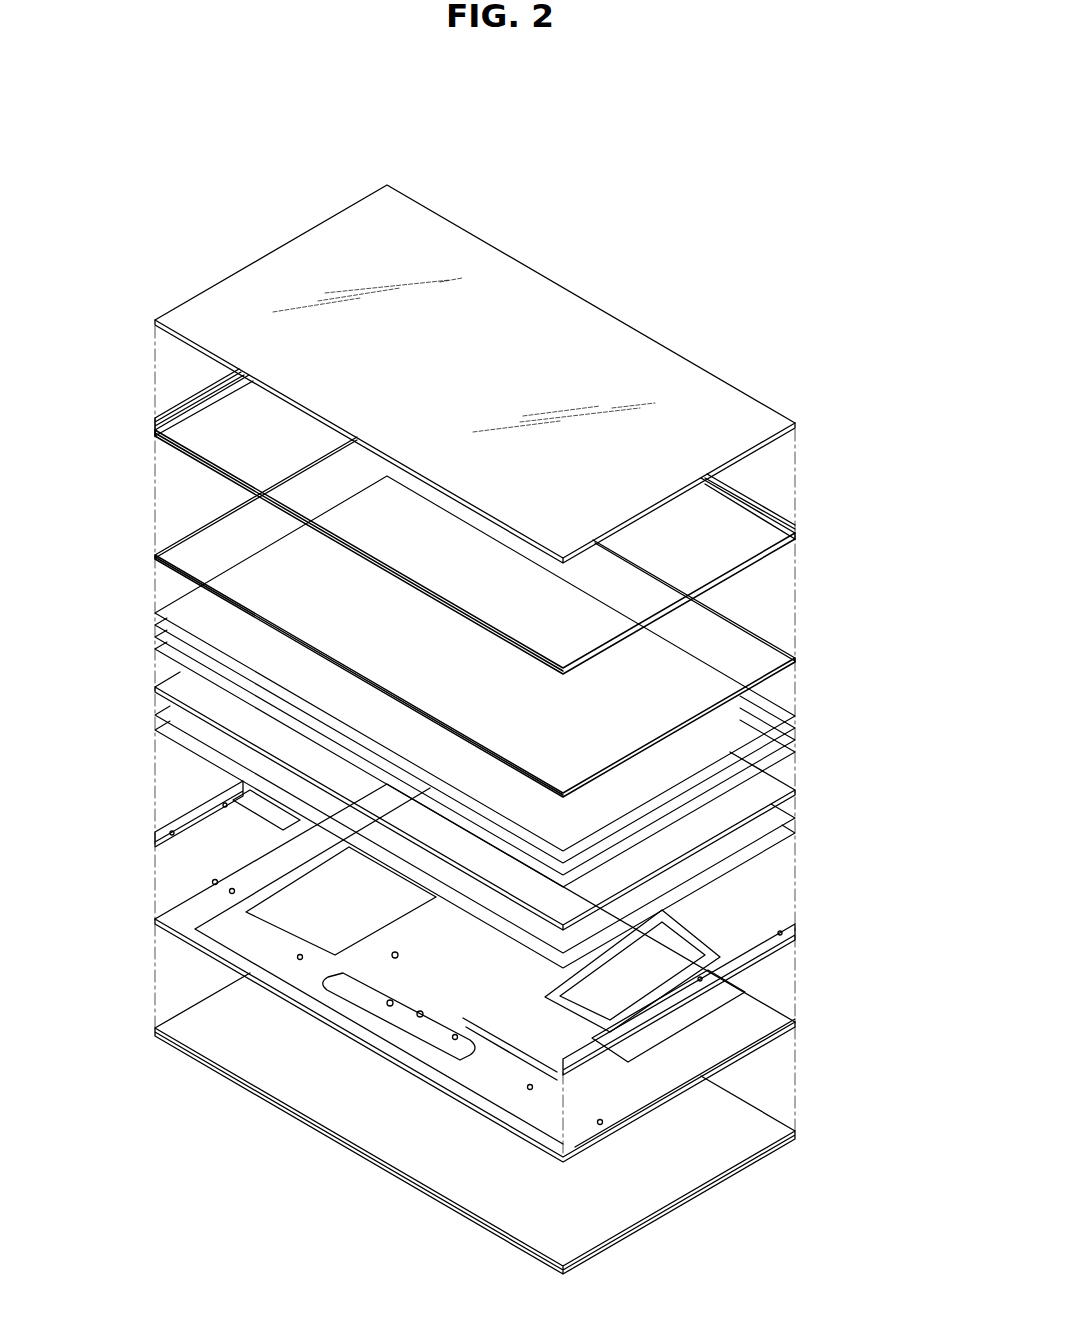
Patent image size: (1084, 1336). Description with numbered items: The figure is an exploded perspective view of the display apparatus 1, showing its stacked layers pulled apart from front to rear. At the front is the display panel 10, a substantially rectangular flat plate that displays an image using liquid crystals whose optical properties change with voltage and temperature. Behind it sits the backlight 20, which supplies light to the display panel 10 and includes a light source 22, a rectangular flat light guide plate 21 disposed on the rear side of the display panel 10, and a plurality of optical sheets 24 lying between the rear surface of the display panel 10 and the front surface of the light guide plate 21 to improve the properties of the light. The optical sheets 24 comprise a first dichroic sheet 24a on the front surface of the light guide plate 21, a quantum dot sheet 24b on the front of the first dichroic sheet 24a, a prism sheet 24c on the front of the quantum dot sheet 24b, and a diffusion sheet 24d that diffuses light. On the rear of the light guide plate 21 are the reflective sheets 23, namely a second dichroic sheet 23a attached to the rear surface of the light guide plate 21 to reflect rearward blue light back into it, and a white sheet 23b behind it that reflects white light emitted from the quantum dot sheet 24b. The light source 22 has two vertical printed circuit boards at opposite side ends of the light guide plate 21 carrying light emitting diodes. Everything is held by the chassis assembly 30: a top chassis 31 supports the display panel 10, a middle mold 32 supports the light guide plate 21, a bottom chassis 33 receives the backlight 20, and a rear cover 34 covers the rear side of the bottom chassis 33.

The display apparatus 1 is at (480, 127).
The display panel 10 is at (530, 265).
The backlight 20 is at (920, 917).
The light guide plate 21 is at (772, 776).
The light source 22 is at (770, 930).
The reflective sheets 23 is at (878, 808).
The second dichroic sheet 23a is at (786, 818).
The white sheet 23b is at (787, 834).
The optical sheets 24 is at (878, 655).
The first dichroic sheet 24a is at (786, 752).
The quantum dot sheet 24b is at (785, 742).
The prism sheet 24c is at (785, 726).
The diffusion sheet 24d is at (783, 712).
The chassis assembly 30 is at (81, 463).
The top chassis 31 is at (177, 447).
The middle mold 32 is at (173, 573).
The bottom chassis 33 is at (180, 913).
The rear cover 34 is at (168, 1027).